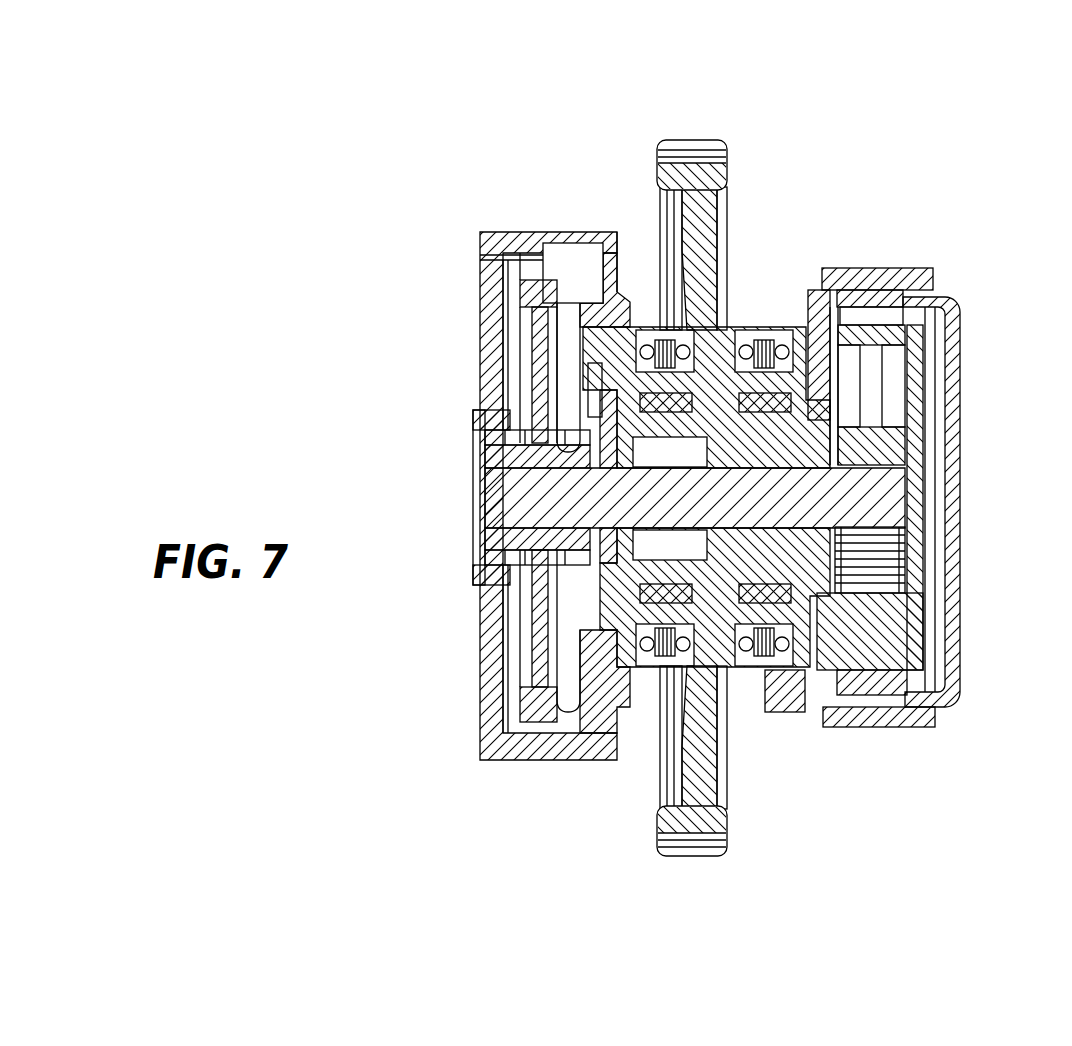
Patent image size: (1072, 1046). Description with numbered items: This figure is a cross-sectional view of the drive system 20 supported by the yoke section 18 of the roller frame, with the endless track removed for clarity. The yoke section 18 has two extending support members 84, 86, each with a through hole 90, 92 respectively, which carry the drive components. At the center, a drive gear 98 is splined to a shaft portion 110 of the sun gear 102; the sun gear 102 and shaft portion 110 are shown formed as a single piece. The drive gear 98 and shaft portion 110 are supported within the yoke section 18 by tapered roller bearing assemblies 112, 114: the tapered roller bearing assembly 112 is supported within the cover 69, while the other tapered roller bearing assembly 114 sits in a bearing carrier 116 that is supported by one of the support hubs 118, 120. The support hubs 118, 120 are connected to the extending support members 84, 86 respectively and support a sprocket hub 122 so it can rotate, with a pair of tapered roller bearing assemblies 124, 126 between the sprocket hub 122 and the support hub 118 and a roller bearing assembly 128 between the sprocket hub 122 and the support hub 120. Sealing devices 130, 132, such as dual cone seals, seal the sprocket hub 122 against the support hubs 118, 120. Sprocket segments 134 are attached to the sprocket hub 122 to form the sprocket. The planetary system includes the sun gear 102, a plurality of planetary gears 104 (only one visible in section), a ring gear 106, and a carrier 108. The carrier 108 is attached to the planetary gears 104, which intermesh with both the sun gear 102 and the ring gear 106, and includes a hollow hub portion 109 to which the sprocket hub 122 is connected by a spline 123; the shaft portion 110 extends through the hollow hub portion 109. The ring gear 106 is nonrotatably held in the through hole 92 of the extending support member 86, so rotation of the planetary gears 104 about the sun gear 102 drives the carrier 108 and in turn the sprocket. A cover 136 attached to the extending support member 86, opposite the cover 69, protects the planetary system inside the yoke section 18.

The yoke section 18 is at (500, 205).
The drive system 20 is at (818, 200).
The cover 69 is at (487, 358).
The extending support member 84 is at (567, 232).
The extending support member 86 is at (860, 305).
The through hole 90 is at (578, 248).
The through hole 92 is at (926, 300).
The drive gear 98 is at (520, 295).
The sun gear 102 is at (902, 495).
The planetary gears 104 is at (905, 335).
The ring gear 106 is at (945, 300).
The carrier 108 is at (917, 632).
The hollow hub portion 109 is at (840, 307).
The shaft portion 110 is at (500, 497).
The tapered roller bearing assembly 112 is at (483, 440).
The tapered roller bearing assembly 114 is at (507, 557).
The bearing carrier 116 is at (570, 570).
The support hub 118 is at (640, 340).
The support hub 120 is at (738, 337).
The sprocket hub 122 is at (727, 215).
The spline 123 is at (750, 338).
The tapered roller bearing assembly 124 is at (620, 398).
The tapered roller bearing assembly 126 is at (638, 652).
The roller bearing assembly 128 is at (753, 597).
The sealing device 130 is at (630, 660).
The sealing device 132 is at (757, 662).
The sprocket segments 134 is at (695, 140).
The cover 136 is at (958, 435).